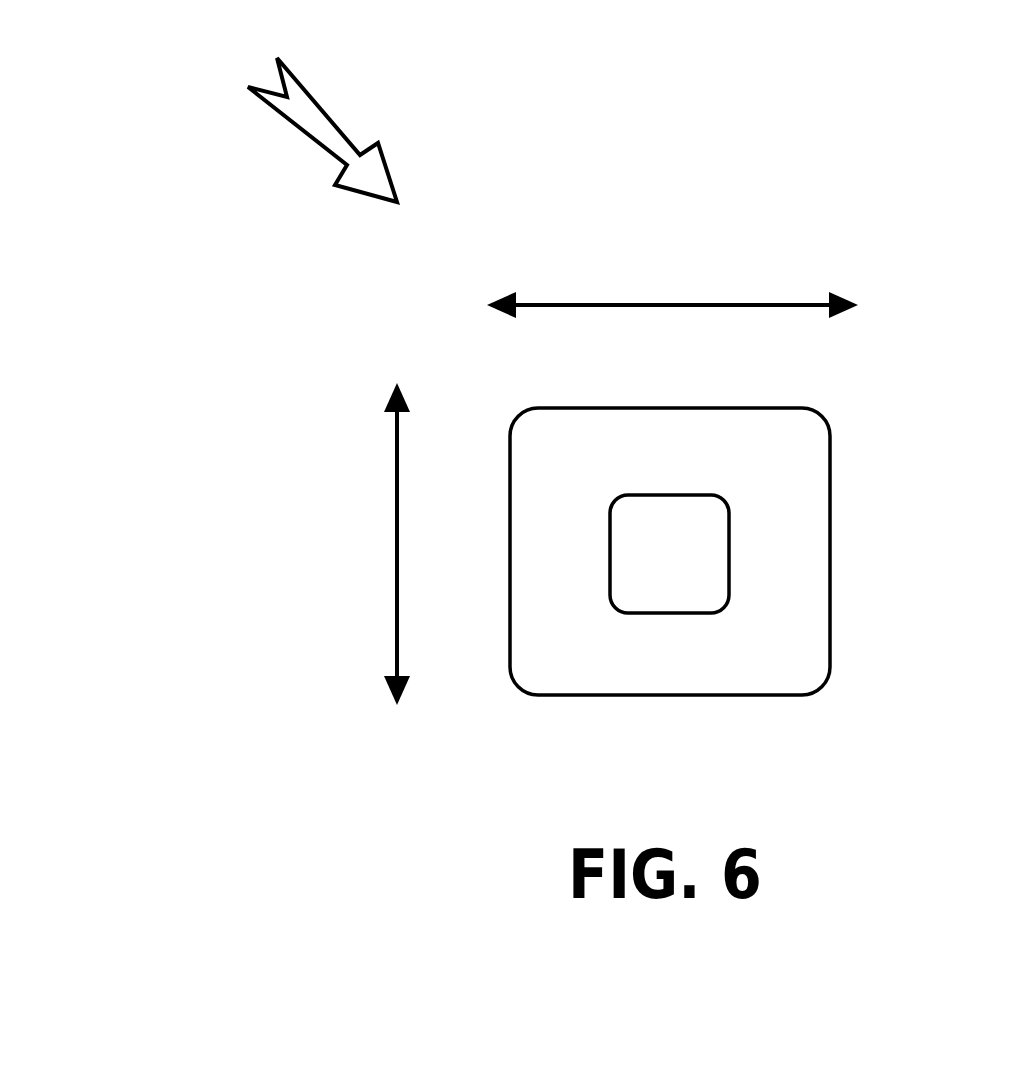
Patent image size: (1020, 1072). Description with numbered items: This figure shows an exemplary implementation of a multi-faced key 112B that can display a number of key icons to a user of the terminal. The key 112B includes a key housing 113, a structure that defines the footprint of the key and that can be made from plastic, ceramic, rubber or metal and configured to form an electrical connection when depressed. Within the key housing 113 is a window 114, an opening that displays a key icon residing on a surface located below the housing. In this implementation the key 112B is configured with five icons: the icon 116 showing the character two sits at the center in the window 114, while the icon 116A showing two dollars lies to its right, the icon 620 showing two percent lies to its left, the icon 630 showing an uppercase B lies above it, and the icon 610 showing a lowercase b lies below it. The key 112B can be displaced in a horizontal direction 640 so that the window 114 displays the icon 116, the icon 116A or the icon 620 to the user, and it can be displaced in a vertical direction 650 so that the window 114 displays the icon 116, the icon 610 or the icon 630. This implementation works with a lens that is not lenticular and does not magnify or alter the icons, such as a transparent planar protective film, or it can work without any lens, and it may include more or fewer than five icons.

The key 112B is at (278, 113).
The key housing 113 is at (682, 557).
The window 114 is at (669, 541).
The key icon 116 is at (756, 616).
The key icon 116A is at (841, 536).
The icon 610 is at (626, 699).
The icon 620 is at (516, 583).
The icon 630 is at (704, 418).
The direction 640 is at (672, 278).
The direction 650 is at (220, 544).